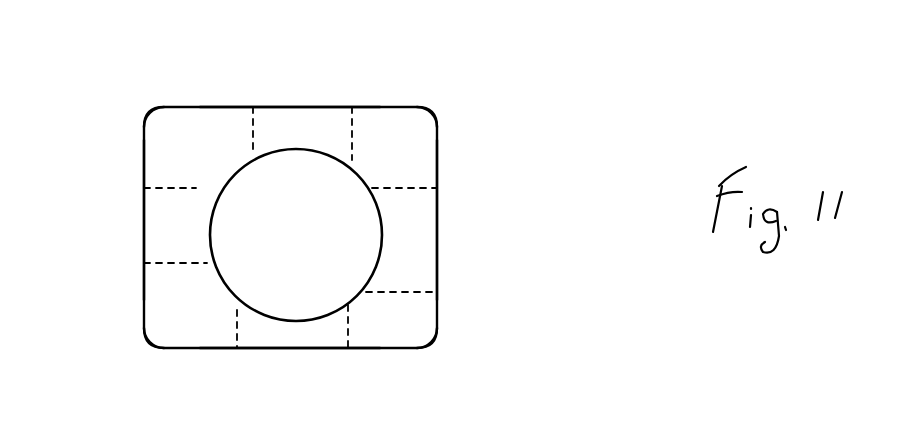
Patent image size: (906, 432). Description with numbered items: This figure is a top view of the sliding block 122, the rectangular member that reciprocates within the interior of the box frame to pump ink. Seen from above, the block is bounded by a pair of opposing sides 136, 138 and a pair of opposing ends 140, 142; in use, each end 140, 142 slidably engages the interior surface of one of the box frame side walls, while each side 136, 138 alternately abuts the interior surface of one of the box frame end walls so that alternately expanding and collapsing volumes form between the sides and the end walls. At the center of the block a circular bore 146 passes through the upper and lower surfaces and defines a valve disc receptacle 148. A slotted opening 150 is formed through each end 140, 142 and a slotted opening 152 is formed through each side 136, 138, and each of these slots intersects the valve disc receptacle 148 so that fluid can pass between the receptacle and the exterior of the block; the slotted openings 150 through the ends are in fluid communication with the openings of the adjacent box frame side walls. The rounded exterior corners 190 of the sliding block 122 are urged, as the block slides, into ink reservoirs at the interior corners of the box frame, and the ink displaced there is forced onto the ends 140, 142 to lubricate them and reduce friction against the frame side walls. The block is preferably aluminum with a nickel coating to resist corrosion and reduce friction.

The sliding block 122 is at (531, 88).
The side 136 is at (375, 348).
The side 138 is at (377, 107).
The end 140 is at (438, 153).
The end 142 is at (145, 155).
The circular bore 146 is at (383, 232).
The valve disc receptacle 148 is at (311, 247).
The slotted opening 150 is at (303, 125).
The slotted opening 152 is at (163, 232).
The exterior corners 190 is at (147, 118).